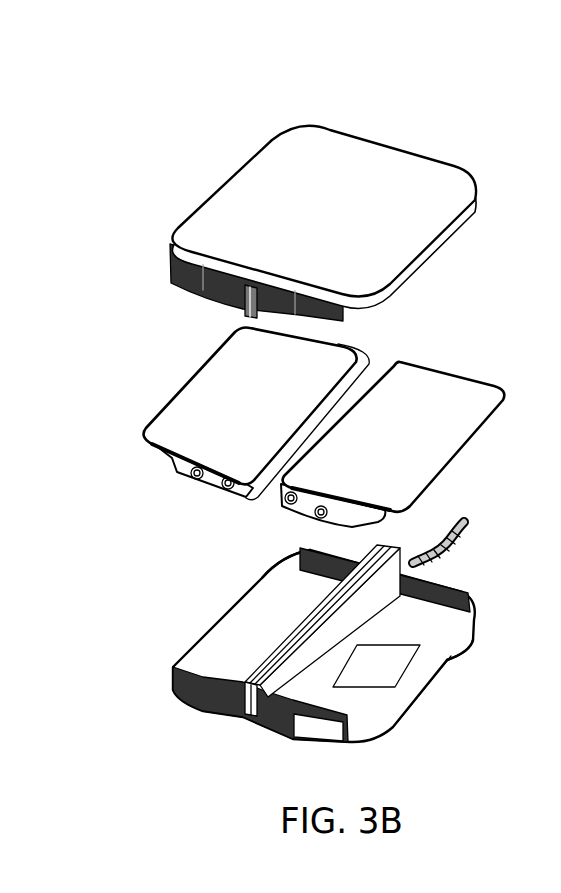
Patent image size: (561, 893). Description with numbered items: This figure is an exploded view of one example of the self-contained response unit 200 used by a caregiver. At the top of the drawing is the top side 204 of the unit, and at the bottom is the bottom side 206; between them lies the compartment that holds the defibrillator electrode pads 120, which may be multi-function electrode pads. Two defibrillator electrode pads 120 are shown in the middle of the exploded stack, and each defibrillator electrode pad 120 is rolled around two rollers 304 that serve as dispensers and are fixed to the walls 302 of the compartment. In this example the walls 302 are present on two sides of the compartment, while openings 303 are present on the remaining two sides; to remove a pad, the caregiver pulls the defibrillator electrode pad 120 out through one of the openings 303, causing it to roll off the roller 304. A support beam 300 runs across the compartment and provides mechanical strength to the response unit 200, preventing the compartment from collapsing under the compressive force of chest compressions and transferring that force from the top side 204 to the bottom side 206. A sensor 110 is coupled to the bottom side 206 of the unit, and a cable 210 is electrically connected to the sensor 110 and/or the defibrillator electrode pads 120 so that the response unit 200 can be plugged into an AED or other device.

The self-contained response unit 200 is at (198, 98).
The top side 204 is at (323, 219).
The defibrillator electrode pads 120 is at (249, 404).
The rollers 304 is at (300, 517).
The cable 210 is at (465, 541).
The walls 302 is at (227, 722).
The openings 303 is at (227, 606).
The support beam 300 is at (253, 660).
The sensor 110 is at (376, 666).
The bottom side 206 is at (380, 725).